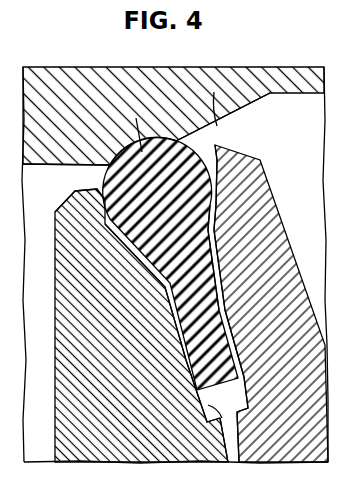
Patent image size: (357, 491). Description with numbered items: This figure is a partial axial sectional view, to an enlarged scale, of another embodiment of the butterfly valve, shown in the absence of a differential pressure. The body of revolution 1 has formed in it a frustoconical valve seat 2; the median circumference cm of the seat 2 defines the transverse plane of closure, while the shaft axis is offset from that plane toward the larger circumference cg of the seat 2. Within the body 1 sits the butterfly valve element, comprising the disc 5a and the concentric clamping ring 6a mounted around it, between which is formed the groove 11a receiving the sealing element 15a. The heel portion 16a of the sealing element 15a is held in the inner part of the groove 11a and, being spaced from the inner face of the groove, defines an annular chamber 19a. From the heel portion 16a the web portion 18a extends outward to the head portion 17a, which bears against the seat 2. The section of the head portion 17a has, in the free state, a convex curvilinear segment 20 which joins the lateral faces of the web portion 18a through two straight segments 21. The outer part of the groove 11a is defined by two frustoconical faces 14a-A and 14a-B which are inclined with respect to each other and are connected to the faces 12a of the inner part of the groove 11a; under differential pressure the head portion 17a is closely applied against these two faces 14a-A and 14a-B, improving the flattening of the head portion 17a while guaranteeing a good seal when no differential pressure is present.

The body of revolution 1 is at (280, 83).
The valve seat 2 is at (217, 135).
The groove 11a is at (178, 137).
The median circumference of the seat cm is at (134, 97).
The larger circumference of the seat cg is at (217, 100).
The straight segments 21 is at (203, 228).
The clamping ring 6a is at (72, 283).
The head portion 17a is at (126, 236).
The convex curvilinear segment 20 is at (100, 182).
The sealing element 15a is at (95, 160).
The disc 5a is at (260, 232).
The frustoconical face 14a-B is at (216, 168).
The frustoconical face 14a-A is at (216, 205).
The web portion 18a is at (212, 298).
The heel portion 16a is at (232, 352).
The annular chamber 19a is at (234, 402).
The faces of the inner part of the groove 12a is at (226, 420).